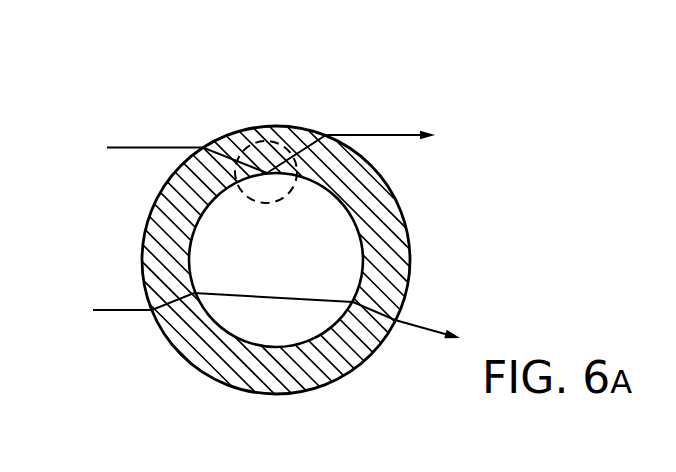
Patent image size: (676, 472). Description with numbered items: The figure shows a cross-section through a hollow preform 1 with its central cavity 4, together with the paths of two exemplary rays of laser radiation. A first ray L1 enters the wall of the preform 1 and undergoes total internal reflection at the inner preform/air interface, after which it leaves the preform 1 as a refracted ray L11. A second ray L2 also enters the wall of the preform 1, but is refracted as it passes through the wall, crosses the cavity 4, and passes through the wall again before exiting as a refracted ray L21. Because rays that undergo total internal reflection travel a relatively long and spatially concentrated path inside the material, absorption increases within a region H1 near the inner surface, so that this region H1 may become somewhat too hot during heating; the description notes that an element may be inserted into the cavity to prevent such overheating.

The hollow preform 1 is at (290, 128).
The cavity 4 is at (283, 333).
The region H1 is at (254, 140).
The first incident ray L1 is at (128, 147).
The refracted ray L11 is at (388, 135).
The second incident ray L2 is at (122, 310).
The refracted ray L21 is at (430, 323).